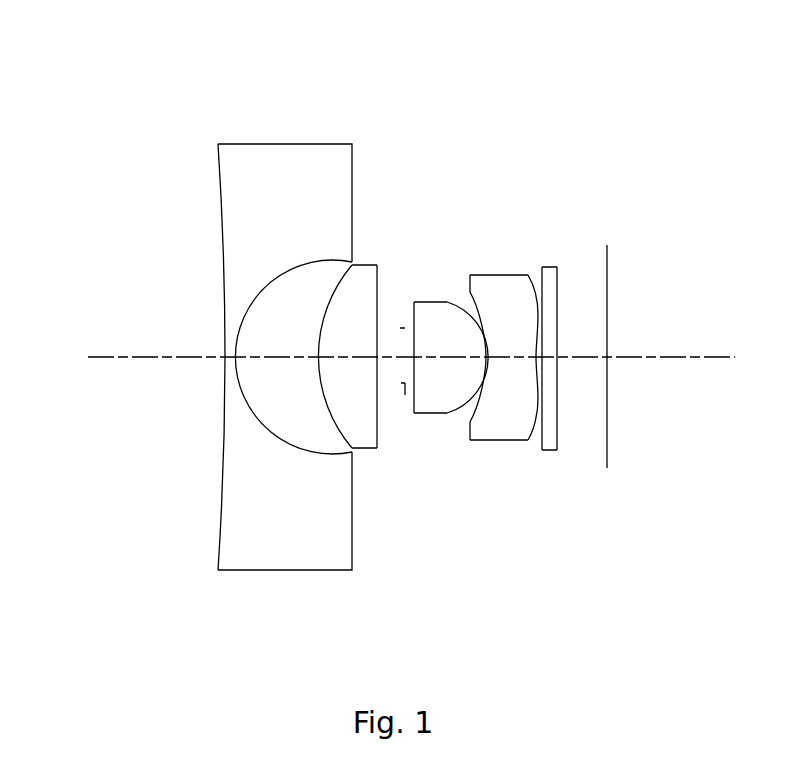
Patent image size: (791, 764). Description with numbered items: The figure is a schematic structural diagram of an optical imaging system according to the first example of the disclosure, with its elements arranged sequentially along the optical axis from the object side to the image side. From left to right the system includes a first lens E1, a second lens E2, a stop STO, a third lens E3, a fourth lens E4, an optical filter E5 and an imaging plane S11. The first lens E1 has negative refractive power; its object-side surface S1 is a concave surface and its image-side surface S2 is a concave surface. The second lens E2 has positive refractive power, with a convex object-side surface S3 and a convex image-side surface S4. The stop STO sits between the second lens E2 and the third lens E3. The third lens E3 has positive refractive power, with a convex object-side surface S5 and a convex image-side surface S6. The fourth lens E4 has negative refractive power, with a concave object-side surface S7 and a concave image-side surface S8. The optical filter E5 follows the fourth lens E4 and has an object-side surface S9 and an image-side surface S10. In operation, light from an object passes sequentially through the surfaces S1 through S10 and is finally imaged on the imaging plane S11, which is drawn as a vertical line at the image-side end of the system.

The first lens E1 is at (284, 144).
The second lens E2 is at (366, 265).
The stop STO is at (405, 328).
The third lens E3 is at (430, 302).
The fourth lens E4 is at (500, 275).
The optical filter E5 is at (552, 267).
The object-side surface of the first lens S1 is at (227, 357).
The image-side surface of the first lens S2 is at (275, 357).
The object-side surface of the second lens S3 is at (319, 357).
The image-side surface of the second lens S4 is at (378, 357).
The object-side surface of the third lens S5 is at (414, 357).
The image-side surface of the third lens S6 is at (487, 357).
The object-side surface of the fourth lens S7 is at (485, 357).
The image-side surface of the fourth lens S8 is at (537, 357).
The object-side surface of the optical filter S9 is at (542, 357).
The image-side surface of the optical filter S10 is at (557, 357).
The imaging plane S11 is at (608, 357).